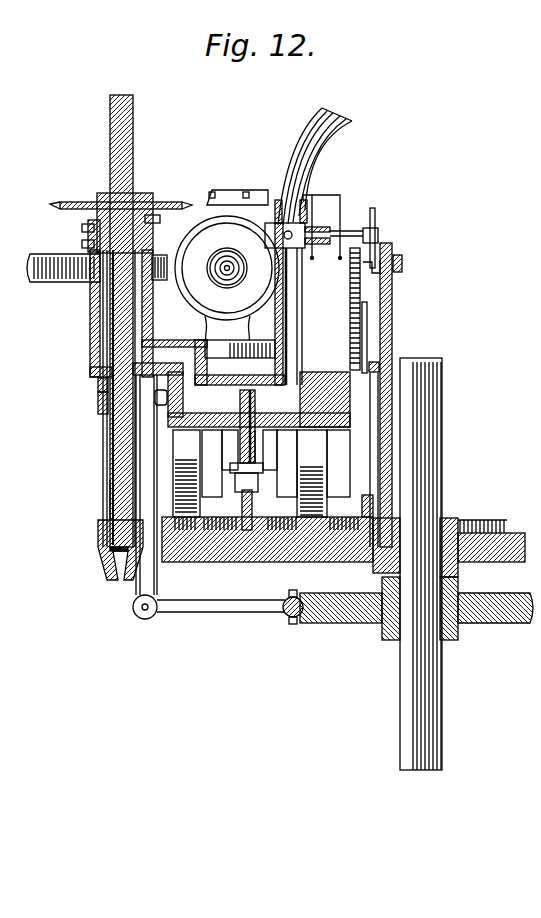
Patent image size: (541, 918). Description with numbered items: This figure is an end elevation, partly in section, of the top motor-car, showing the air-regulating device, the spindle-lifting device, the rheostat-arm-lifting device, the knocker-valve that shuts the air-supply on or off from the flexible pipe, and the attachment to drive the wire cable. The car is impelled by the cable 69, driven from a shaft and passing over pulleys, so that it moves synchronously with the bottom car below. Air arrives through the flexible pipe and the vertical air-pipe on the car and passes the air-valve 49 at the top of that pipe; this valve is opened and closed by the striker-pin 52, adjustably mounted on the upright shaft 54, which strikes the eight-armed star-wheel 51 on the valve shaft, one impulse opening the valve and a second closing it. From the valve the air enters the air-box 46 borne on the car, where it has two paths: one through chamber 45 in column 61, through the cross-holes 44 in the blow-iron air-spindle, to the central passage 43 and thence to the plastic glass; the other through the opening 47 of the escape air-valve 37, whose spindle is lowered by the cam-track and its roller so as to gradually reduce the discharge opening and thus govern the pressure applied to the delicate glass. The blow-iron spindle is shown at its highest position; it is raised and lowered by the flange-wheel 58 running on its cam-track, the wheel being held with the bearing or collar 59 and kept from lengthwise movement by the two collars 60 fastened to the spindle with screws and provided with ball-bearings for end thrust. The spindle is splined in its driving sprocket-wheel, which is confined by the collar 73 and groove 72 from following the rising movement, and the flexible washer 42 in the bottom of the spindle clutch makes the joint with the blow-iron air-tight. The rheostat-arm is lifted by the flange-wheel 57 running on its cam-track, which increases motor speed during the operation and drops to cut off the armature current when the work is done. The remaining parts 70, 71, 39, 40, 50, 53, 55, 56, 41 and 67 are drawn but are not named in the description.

The vertical shaft 70 is at (108, 321).
The hub bushing 71 is at (118, 198).
The groove 72 is at (148, 222).
The collar 73 is at (81, 236).
The bracket 39 is at (237, 189).
The rod 40 is at (322, 219).
The cross-holes 44 is at (160, 250).
The air-valve 49 is at (267, 236).
The arm 50 is at (354, 229).
The star-wheel 51 is at (384, 238).
The striker-pin 52 is at (370, 277).
The block 53 is at (402, 262).
The upright shaft 54 is at (397, 395).
The spring 55 is at (358, 294).
The bar 56 is at (371, 337).
The flange-wheel 57 is at (378, 364).
The flange-wheel 58 is at (170, 398).
The chamber 45 is at (110, 291).
The column 61 is at (90, 315).
The collars 60 is at (98, 384).
The bearing or collar 59 is at (98, 412).
The central passage 43 is at (108, 498).
The flexible washer 42 is at (112, 550).
The air-box 46 is at (317, 399).
The opening 47 is at (258, 426).
The block 41 is at (242, 461).
The escape air-valve 37 is at (256, 436).
The rack 67 is at (350, 316).
The cable 69 is at (290, 618).